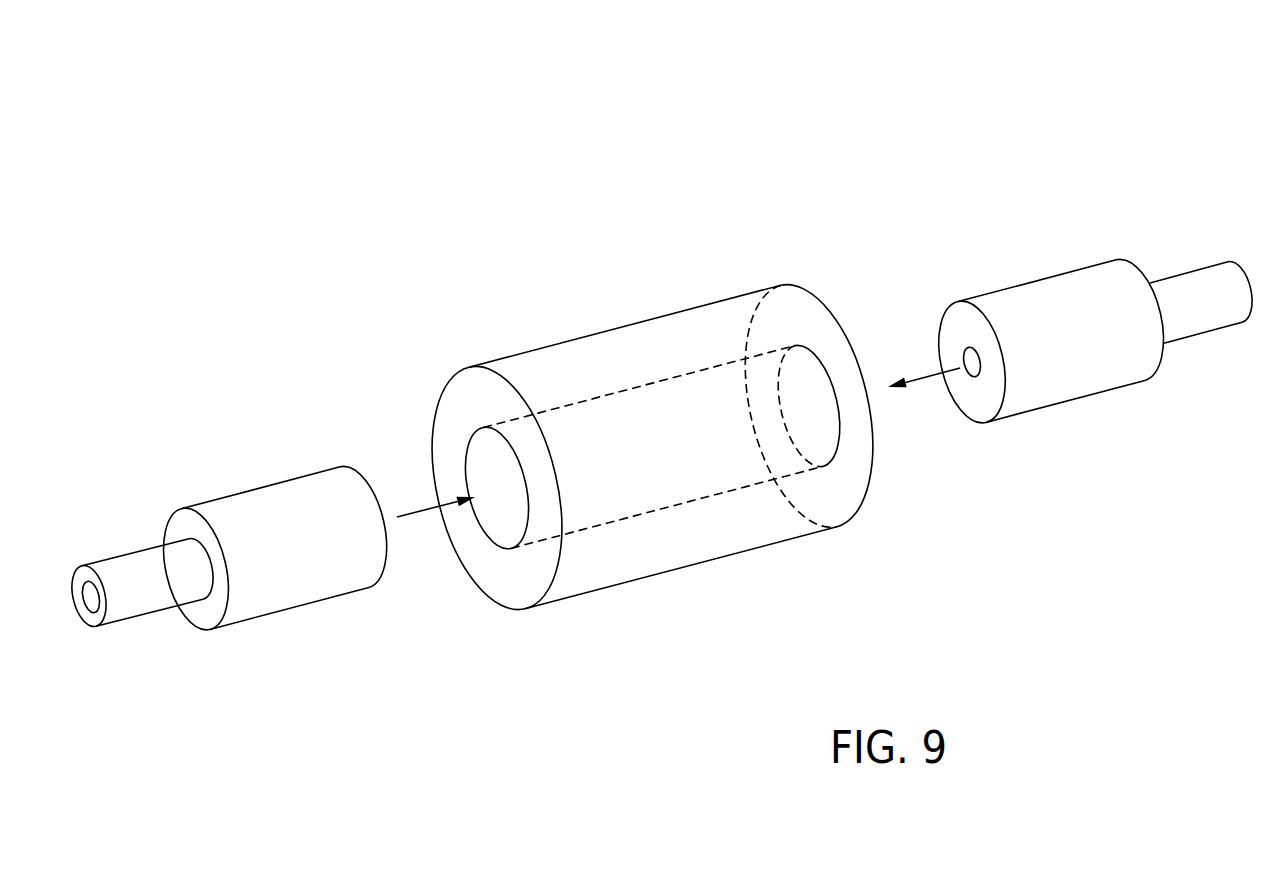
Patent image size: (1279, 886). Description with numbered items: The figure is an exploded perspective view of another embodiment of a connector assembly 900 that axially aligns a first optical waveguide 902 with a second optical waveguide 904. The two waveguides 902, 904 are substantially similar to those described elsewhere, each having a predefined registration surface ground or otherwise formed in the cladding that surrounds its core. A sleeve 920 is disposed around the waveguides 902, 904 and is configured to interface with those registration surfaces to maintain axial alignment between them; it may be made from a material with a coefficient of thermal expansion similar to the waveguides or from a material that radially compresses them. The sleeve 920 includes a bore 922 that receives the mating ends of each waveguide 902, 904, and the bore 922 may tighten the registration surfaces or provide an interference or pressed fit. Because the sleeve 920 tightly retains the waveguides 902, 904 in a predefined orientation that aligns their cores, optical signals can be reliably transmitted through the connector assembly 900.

The connector assembly 900 is at (599, 148).
The first optical waveguide 902 is at (1061, 255).
The second optical waveguide 904 is at (288, 480).
The sleeve 920 is at (553, 367).
The bore 922 is at (513, 515).